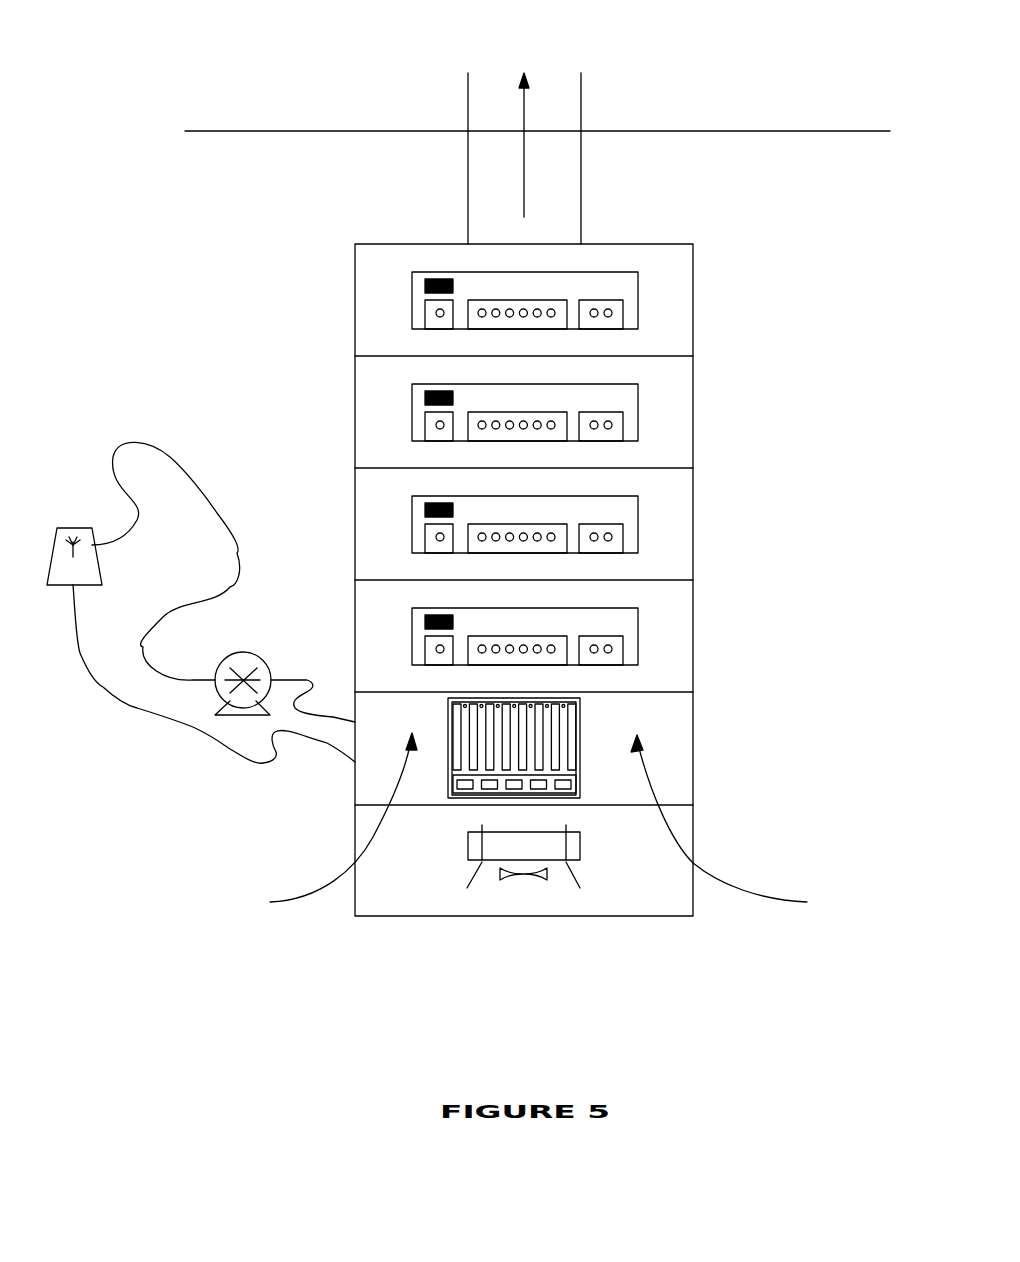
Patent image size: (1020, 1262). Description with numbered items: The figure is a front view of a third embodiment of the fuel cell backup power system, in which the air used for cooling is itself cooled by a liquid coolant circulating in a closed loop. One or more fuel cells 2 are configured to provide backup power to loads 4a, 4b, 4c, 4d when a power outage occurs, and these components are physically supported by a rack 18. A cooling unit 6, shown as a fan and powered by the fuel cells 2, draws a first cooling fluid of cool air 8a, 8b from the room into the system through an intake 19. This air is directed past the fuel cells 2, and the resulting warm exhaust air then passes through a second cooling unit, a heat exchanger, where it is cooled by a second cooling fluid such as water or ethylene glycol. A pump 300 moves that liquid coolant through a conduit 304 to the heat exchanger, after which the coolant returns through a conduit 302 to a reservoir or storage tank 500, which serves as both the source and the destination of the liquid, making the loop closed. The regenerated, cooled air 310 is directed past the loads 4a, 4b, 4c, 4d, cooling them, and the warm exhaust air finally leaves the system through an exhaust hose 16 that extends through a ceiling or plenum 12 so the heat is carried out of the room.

The fuel cell 2 is at (448, 745).
The load 4a is at (412, 634).
The load 4b is at (412, 522).
The load 4c is at (412, 410).
The load 4d is at (412, 297).
The cooling unit 6 is at (468, 837).
The cooling fluid 8a is at (324, 822).
The cooling fluid 8b is at (733, 823).
The ceiling or plenum 12 is at (667, 130).
The exhaust hose 16 is at (582, 100).
The rack 18 is at (693, 525).
The intake 19 is at (693, 747).
The pump 300 is at (245, 652).
The conduit 302 is at (227, 747).
The conduit 304 is at (187, 487).
The regenerated first cooling fluid 310 is at (552, 148).
The reservoir or storage tank 500 is at (73, 528).